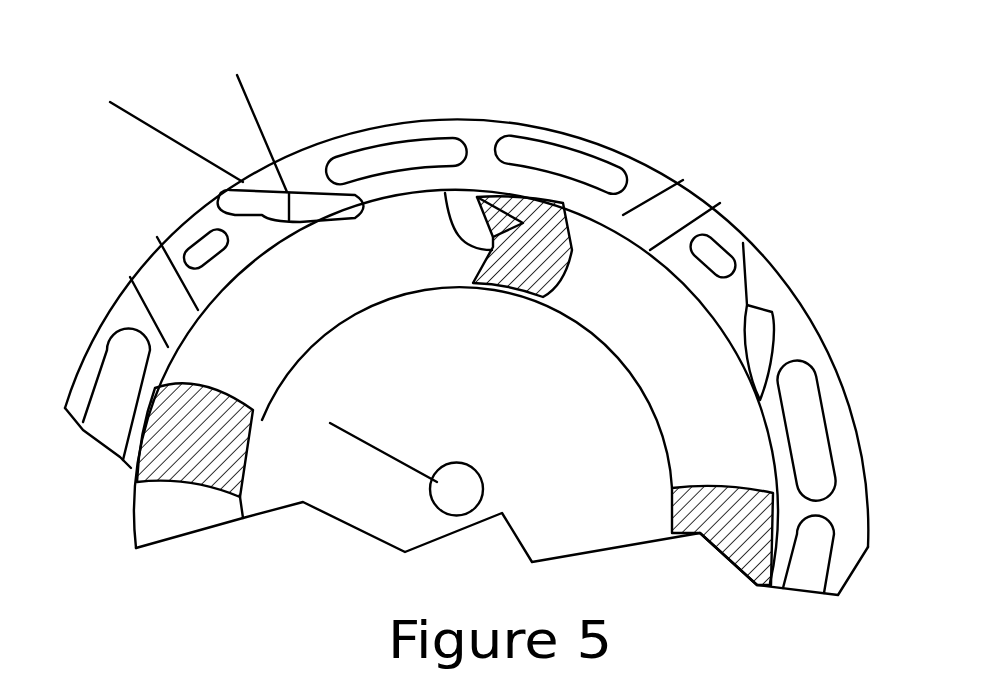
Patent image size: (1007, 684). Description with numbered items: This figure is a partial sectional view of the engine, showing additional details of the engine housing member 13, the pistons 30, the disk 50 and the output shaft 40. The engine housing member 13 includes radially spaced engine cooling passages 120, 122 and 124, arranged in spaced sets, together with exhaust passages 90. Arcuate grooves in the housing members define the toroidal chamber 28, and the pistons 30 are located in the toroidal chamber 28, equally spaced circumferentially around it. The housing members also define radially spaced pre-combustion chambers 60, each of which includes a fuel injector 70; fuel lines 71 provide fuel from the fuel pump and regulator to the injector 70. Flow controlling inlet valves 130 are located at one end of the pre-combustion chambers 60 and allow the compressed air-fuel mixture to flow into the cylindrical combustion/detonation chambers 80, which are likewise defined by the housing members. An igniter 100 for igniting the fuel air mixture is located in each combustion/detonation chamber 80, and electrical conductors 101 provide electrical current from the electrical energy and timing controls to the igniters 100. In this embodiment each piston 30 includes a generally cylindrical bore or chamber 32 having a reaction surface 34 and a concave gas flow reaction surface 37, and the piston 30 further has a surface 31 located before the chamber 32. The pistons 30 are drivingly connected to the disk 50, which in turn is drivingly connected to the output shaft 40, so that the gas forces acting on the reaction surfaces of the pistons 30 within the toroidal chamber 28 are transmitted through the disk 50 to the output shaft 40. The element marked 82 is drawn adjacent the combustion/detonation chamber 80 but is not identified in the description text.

The engine housing member 13 is at (410, 110).
The toroidal chamber 28 is at (608, 278).
The piston 30 is at (157, 433).
The surface 31 is at (560, 215).
The cylindrical bore or chamber 32 is at (518, 210).
The reaction surface 34 is at (508, 207).
The concave gas flow reaction surface 37 is at (444, 190).
The output shaft 40 is at (165, 330).
The disk 50 is at (320, 382).
The pre-combustion chamber 60 is at (213, 208).
The fuel injector 70 is at (233, 190).
The fuel line 71 is at (142, 124).
The combustion/detonation chamber 80 is at (287, 187).
The magnet pocket 82 is at (315, 203).
The exhaust passage 90 is at (160, 277).
The igniter 100 is at (265, 195).
The electrical conductor 101 is at (245, 84).
The engine cooling passage 120 is at (408, 152).
The engine cooling passage 122 is at (548, 158).
The engine cooling passage 124 is at (196, 247).
The flow controlling inlet valve 130 is at (240, 190).